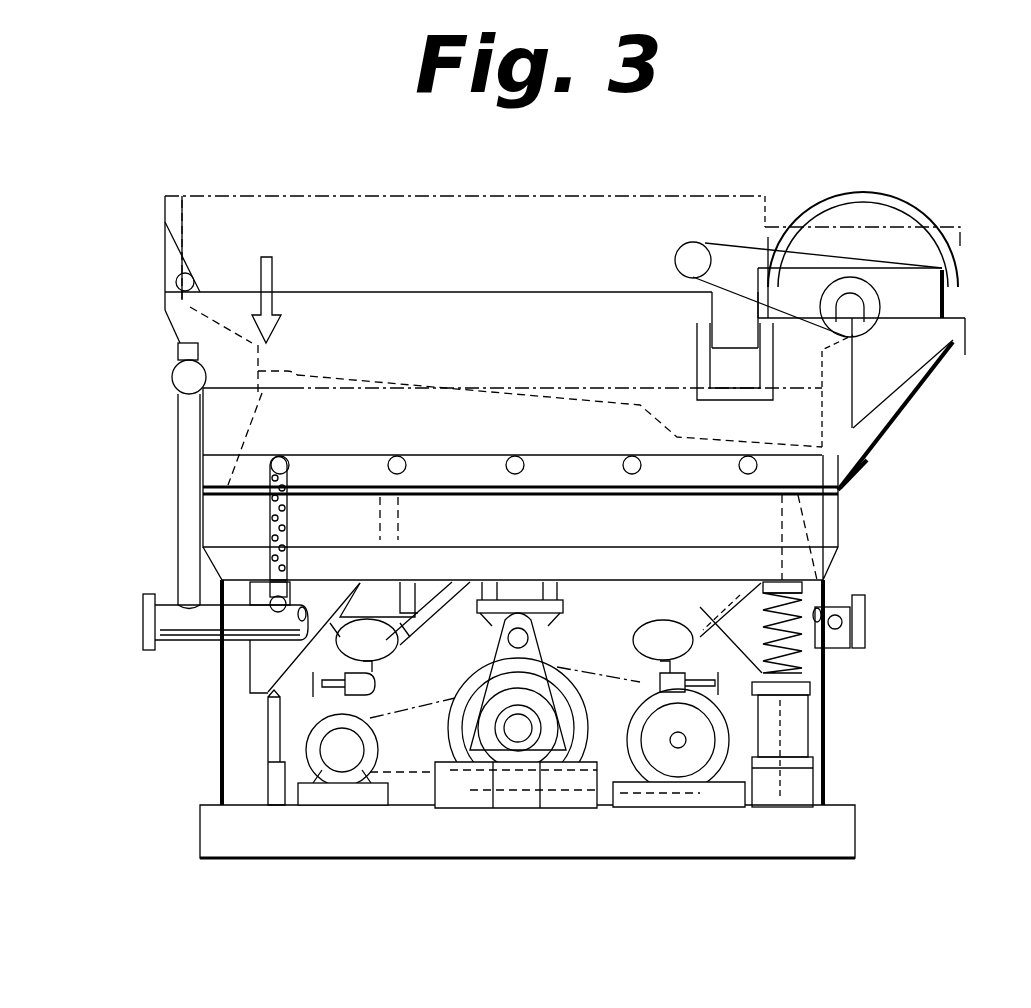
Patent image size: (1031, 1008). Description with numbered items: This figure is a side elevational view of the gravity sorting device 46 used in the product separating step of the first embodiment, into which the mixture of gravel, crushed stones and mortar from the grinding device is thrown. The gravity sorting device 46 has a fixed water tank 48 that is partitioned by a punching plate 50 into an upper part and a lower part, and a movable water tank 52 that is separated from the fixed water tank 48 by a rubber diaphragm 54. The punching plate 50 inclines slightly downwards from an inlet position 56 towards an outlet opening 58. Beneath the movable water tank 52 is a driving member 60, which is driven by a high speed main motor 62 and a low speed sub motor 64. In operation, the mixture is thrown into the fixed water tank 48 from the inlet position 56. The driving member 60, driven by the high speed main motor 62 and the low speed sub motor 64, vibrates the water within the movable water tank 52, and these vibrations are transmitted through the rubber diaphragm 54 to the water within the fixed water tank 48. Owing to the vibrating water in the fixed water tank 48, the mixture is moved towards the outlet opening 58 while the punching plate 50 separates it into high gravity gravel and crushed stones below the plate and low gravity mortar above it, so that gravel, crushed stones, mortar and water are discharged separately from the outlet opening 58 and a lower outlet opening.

The gravity sorting device 46 is at (728, 185).
The fixed water tank 48 is at (472, 318).
The punching plate 50 is at (200, 405).
The movable water tank 52 is at (218, 520).
The rubber diaphragm 54 is at (215, 487).
The inlet position 56 is at (222, 222).
The outlet opening 58 is at (935, 365).
The driving member 60 is at (598, 742).
The high speed main motor 62 is at (338, 760).
The low speed sub motor 64 is at (697, 760).